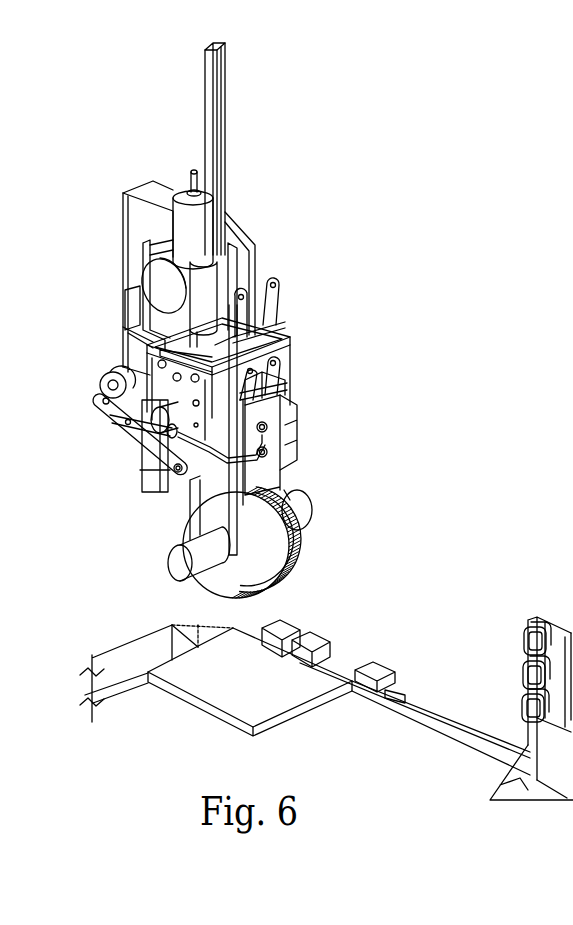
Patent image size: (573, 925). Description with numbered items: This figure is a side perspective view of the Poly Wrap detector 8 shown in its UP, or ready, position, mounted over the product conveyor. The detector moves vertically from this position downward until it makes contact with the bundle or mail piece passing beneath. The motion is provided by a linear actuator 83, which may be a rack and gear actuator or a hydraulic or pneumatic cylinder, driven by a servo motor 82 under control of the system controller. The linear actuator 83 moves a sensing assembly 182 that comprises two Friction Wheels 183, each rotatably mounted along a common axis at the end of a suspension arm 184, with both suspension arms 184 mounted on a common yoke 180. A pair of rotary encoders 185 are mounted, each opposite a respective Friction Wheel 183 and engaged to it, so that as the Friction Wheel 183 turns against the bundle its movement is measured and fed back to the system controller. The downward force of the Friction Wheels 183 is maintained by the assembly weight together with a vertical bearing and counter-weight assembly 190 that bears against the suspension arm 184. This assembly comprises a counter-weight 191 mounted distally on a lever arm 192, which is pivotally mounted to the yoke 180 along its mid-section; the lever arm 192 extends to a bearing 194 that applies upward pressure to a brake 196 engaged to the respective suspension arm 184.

The Poly Wrap detector 8 is at (318, 174).
The servo motor 82 is at (148, 190).
The linear actuator 83 is at (268, 262).
The yoke 180 is at (287, 343).
The sensing assembly 182 is at (312, 542).
The Friction Wheel 183 is at (212, 583).
The suspension arm 184 is at (290, 433).
The rotary encoder 185 is at (172, 567).
The vertical bearing and counter-weight assembly 190 is at (107, 408).
The counter-weight 191 is at (100, 380).
The lever arm 192 is at (110, 430).
The bearing 194 is at (140, 476).
The brake 196 is at (283, 467).